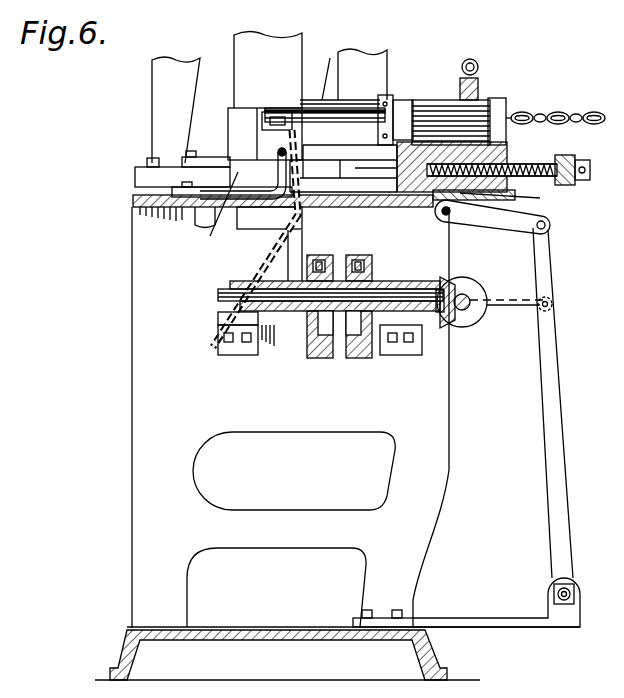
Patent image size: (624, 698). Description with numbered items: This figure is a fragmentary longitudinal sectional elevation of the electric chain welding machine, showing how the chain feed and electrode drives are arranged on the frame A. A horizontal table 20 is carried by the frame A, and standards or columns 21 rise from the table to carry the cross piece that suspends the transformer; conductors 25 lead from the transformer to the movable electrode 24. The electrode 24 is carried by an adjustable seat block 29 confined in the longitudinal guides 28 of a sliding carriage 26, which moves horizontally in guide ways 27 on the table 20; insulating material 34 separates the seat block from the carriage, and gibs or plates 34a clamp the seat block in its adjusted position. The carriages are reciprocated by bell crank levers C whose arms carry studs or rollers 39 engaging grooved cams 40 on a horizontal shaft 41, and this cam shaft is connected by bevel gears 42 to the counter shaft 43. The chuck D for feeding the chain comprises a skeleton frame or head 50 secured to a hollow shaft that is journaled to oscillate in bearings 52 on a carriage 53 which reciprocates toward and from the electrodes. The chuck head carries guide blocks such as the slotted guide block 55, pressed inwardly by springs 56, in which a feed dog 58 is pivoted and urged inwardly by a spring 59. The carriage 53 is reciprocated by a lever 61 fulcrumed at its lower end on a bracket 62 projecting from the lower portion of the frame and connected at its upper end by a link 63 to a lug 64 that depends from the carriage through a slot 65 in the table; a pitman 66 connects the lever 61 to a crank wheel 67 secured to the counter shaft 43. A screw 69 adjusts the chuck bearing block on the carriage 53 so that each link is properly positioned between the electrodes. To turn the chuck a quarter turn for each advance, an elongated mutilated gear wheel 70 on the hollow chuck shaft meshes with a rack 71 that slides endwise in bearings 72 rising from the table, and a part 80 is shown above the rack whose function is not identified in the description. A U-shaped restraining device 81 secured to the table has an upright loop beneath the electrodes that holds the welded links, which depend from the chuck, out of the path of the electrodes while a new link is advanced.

The horizontal table 20 is at (356, 262).
The standards or columns 21 is at (158, 72).
The movable electrode 24 is at (230, 110).
The conductors 25 is at (268, 70).
The sliding carriage 26 is at (252, 195).
The guide ways 27 is at (160, 182).
The longitudinal guides 28 is at (195, 157).
The adjustable seat block 29 is at (246, 134).
The insulating material 34 is at (217, 220).
The gibs or plates 34a is at (172, 160).
The studs or rollers 39 is at (314, 262).
The grooved cams 40 is at (330, 358).
The horizontal shaft 41 is at (282, 345).
The bevel gears 42 is at (450, 320).
The shaft 43 is at (470, 312).
The skeleton frame or head 50 is at (364, 106).
The bearings 52 is at (395, 95).
The carriage 53 is at (428, 182).
The guide block 55 is at (300, 110).
The springs 56 is at (325, 57).
The feed dog 58 is at (320, 98).
The spring 59 is at (288, 138).
The lever 61 is at (555, 381).
The bracket 62 is at (528, 622).
The link 63 is at (496, 222).
The lug 64 is at (432, 270).
The slot 65 is at (515, 205).
The pitman 66 is at (524, 300).
The crank wheel 67 is at (484, 290).
The screw 69 is at (556, 170).
The elongated mutilated gear wheel 70 is at (450, 110).
The rack 71 is at (500, 100).
The bearings 72 is at (465, 78).
The ring 80 is at (472, 58).
The restraining device 81 is at (204, 228).
The frame A is at (294, 471).
The bell crank levers C is at (374, 278).
The chuck D is at (409, 99).